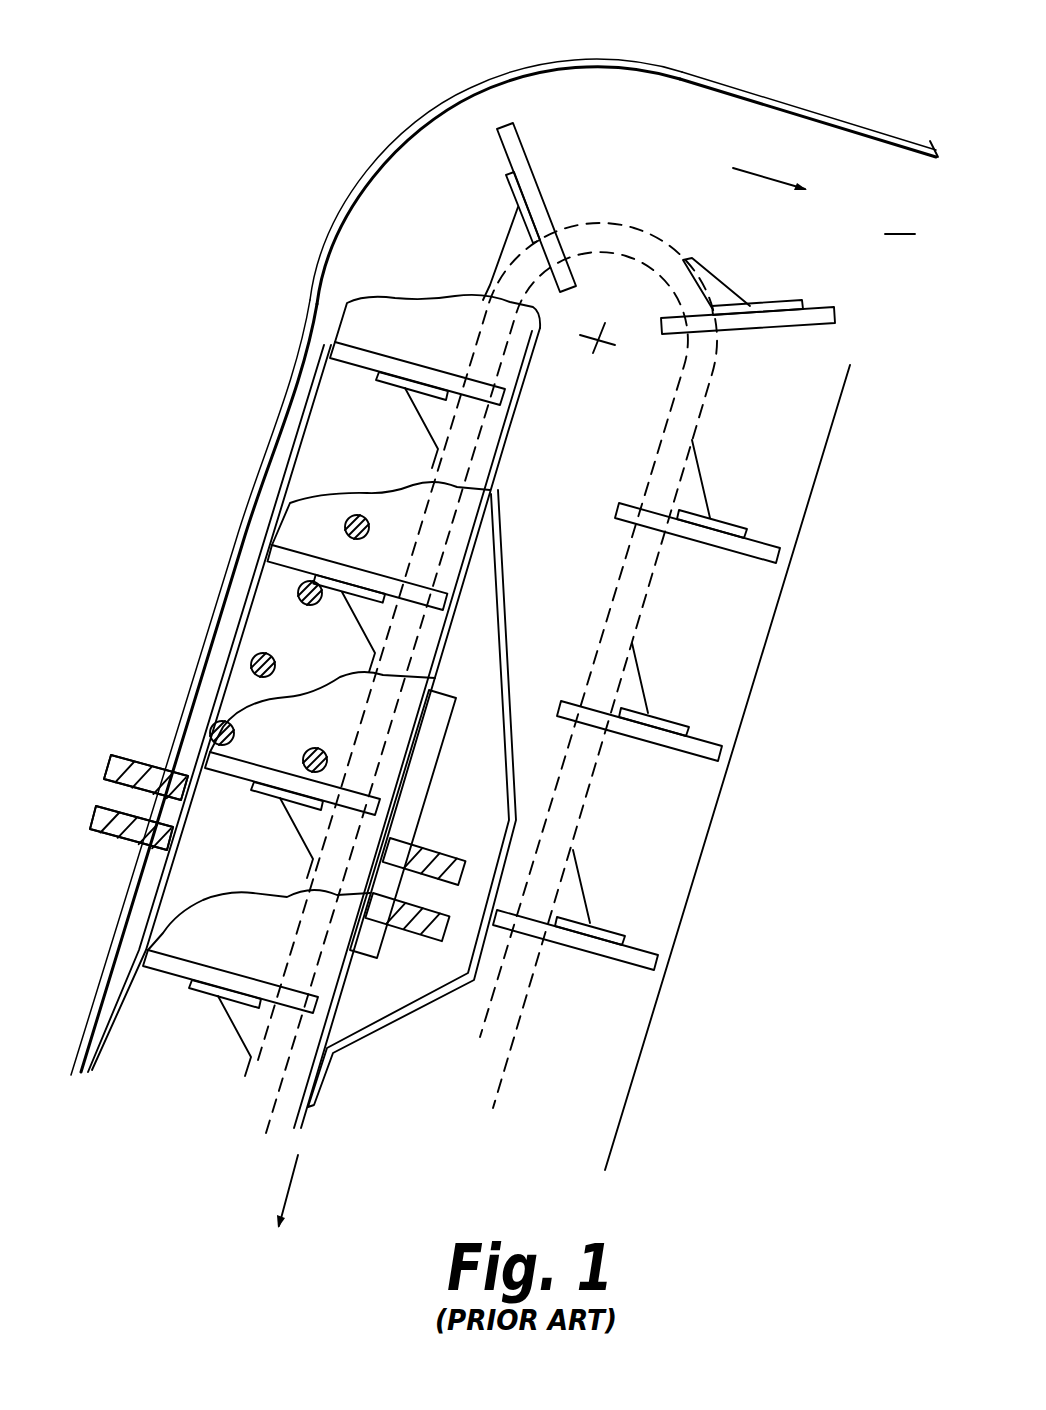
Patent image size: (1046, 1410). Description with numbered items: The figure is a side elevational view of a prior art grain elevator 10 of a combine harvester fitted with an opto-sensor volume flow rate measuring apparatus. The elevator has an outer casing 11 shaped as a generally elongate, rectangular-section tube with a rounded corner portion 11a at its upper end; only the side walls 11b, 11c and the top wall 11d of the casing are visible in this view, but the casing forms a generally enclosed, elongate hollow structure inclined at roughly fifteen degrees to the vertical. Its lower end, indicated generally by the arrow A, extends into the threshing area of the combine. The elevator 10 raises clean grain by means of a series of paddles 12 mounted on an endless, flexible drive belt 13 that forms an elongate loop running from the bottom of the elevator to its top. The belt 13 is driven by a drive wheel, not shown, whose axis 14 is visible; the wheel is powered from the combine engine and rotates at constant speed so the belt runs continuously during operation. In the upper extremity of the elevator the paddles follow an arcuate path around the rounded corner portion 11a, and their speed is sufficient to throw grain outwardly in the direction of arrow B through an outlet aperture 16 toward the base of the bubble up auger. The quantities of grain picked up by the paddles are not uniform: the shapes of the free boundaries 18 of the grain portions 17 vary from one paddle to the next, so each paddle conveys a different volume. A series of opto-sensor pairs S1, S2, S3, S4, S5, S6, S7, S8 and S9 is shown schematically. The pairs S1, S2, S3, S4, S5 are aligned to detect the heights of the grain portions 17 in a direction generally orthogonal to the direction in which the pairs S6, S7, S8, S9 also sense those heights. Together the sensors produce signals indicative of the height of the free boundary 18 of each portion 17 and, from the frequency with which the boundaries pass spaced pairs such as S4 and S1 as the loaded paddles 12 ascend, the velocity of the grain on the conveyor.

The grain elevator 10 is at (372, 115).
The outer casing 11 is at (602, 56).
The rounded corner portion 11a is at (470, 88).
The side wall 11b is at (258, 455).
The side wall 11c is at (767, 647).
The top wall 11d is at (737, 80).
The paddles 12 is at (523, 180).
The drive belt 13 is at (640, 253).
The axis 14 is at (598, 343).
The outlet aperture 16 is at (900, 219).
The grain portions 17 is at (450, 347).
The free boundaries 18 is at (459, 293).
The opto-sensor pair S1 is at (356, 513).
The opto-sensor pair S2 is at (300, 590).
The opto-sensor pair S3 is at (252, 662).
The opto-sensor pair S4 is at (213, 727).
The opto-sensor pair S5 is at (307, 753).
The opto-sensor pair S6 is at (138, 772).
The opto-sensor pair S7 is at (146, 777).
The opto-sensor pair S8 is at (135, 828).
The opto-sensor pair S9 is at (131, 828).